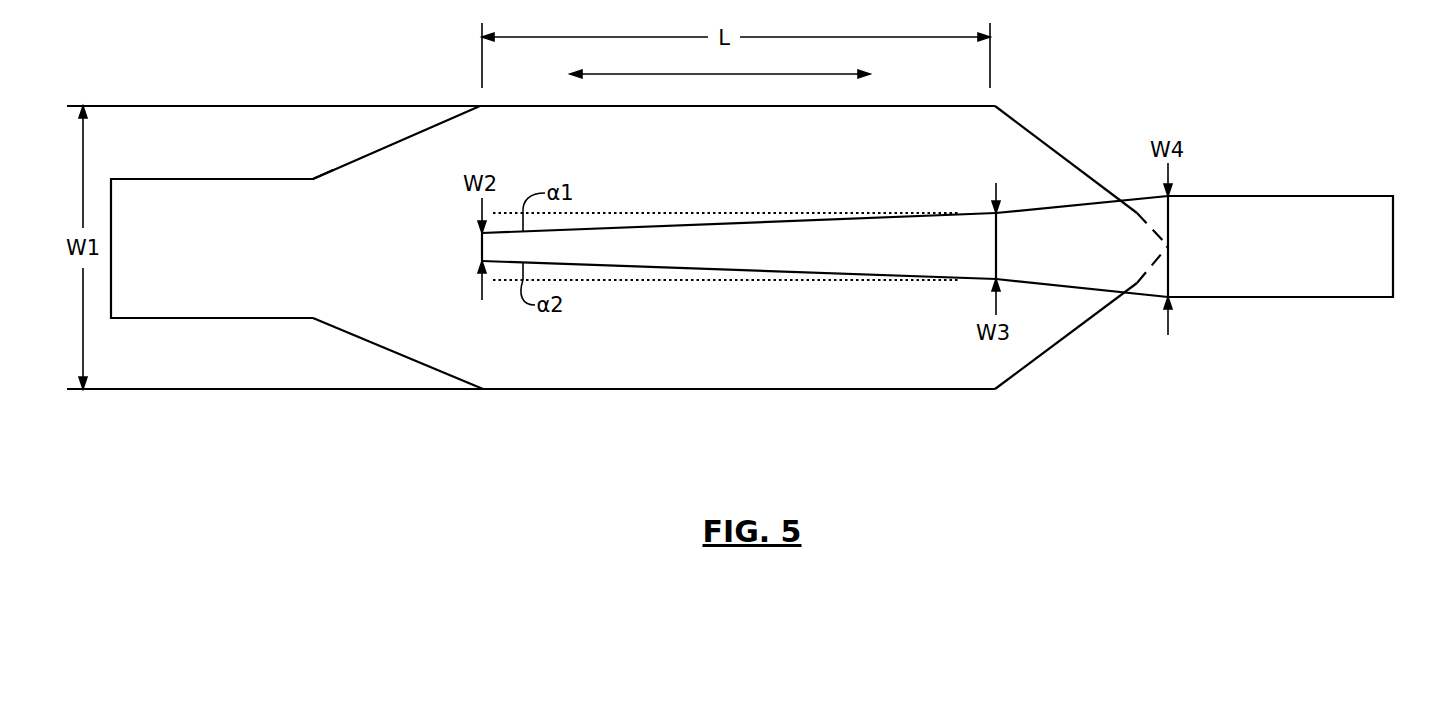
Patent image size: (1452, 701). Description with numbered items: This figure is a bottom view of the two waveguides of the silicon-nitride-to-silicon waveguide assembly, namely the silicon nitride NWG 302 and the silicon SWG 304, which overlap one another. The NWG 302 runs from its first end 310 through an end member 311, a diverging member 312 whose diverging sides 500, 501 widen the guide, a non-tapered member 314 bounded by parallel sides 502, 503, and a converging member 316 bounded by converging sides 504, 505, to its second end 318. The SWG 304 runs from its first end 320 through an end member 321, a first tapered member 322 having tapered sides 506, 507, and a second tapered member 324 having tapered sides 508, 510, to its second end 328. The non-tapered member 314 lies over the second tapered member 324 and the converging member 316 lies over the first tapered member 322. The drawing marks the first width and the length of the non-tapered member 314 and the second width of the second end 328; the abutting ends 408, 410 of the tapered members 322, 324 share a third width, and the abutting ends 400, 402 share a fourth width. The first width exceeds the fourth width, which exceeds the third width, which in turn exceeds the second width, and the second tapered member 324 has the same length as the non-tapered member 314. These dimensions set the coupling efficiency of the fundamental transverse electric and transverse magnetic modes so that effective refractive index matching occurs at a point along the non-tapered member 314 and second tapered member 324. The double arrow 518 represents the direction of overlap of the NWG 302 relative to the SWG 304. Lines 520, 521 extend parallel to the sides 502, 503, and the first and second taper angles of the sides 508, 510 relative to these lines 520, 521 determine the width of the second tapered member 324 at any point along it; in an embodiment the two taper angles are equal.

The NWG 302 is at (1066, 117).
The SWG 304 is at (1281, 190).
The first end 310 is at (211, 274).
The end member 311 is at (212, 148).
The diverging member 312 is at (396, 142).
The non-tapered member 314 is at (393, 413).
The converging member 316 is at (1089, 116).
The second end 318 is at (1221, 242).
The first end 320 is at (1413, 308).
The end member 321 is at (1317, 164).
The first tapered member 322 is at (1047, 182).
The second tapered member 324 is at (739, 197).
The second end 328 is at (421, 238).
The abutting end 400 is at (1180, 332).
The abutting end 402 is at (1214, 221).
The abutting end 408 is at (948, 291).
The abutting end 410 is at (1055, 246).
The diverging side 500 is at (306, 194).
The diverging side 501 is at (398, 337).
The parallel side 502 is at (531, 120).
The parallel side 503 is at (832, 367).
The converging side 504 is at (1089, 202).
The converging side 505 is at (1040, 336).
The tapered side 506 is at (1119, 244).
The tapered side 507 is at (1082, 346).
The tapered side 508 is at (709, 235).
The tapered side 510 is at (739, 258).
The double arrow 518 is at (720, 63).
The line 520 is at (726, 174).
The line 521 is at (726, 312).